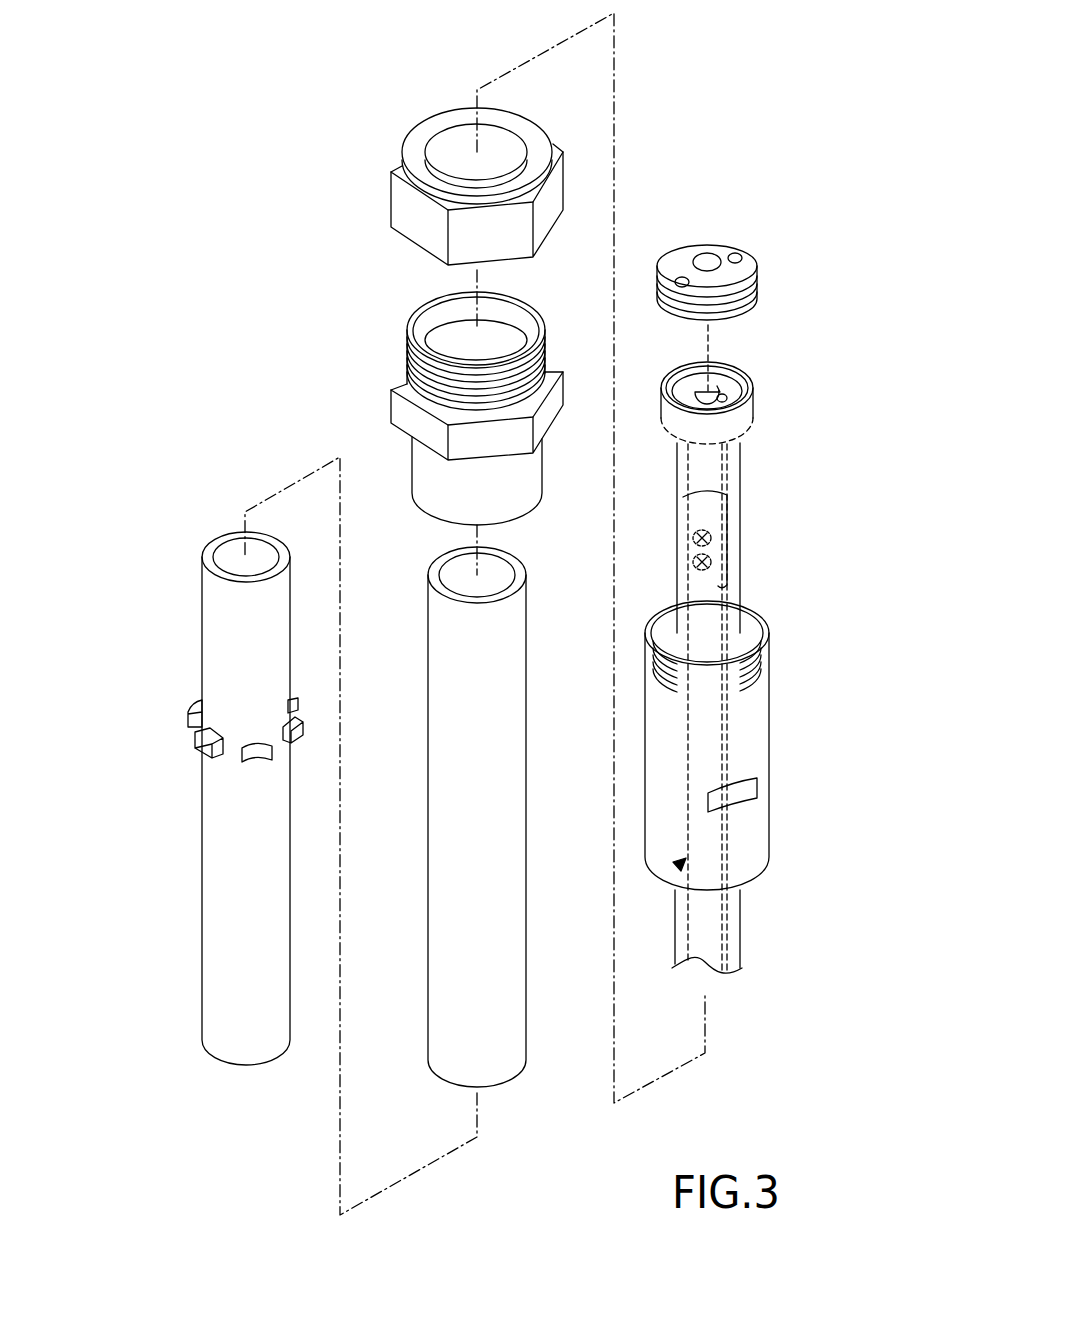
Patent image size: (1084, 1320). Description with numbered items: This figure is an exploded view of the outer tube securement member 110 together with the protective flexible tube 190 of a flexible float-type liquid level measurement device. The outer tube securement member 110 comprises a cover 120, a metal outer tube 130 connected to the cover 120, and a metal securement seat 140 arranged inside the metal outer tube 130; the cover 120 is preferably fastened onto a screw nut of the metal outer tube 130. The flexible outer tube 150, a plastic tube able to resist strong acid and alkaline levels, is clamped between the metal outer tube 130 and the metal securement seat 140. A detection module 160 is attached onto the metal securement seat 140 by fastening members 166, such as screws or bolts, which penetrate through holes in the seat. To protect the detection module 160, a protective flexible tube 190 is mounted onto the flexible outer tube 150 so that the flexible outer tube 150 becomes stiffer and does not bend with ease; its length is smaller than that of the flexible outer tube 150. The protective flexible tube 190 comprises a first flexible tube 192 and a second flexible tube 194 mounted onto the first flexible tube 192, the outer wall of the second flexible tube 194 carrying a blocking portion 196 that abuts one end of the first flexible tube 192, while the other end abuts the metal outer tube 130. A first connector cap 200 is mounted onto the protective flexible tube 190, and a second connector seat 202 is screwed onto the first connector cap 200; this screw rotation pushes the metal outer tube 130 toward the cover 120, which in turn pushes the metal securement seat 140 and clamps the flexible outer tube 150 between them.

The outer tube securement member 110 is at (756, 609).
The cover 120 is at (758, 293).
The metal outer tube 130 is at (728, 749).
The metal securement seat 140 is at (729, 667).
The flexible outer tube 150 is at (735, 927).
The detection module 160 is at (680, 861).
The fastening member 166 is at (690, 541).
The protective flexible tube 190 is at (308, 809).
The first flexible tube 192 is at (440, 863).
The second flexible tube 194 is at (287, 845).
The blocking portion 196 is at (195, 738).
The first connector cap 200 is at (400, 205).
The second connector seat 202 is at (400, 402).